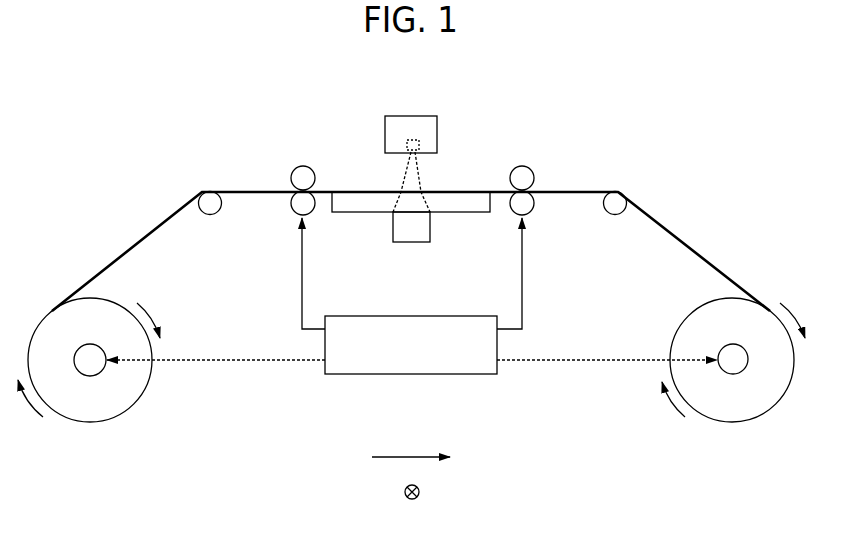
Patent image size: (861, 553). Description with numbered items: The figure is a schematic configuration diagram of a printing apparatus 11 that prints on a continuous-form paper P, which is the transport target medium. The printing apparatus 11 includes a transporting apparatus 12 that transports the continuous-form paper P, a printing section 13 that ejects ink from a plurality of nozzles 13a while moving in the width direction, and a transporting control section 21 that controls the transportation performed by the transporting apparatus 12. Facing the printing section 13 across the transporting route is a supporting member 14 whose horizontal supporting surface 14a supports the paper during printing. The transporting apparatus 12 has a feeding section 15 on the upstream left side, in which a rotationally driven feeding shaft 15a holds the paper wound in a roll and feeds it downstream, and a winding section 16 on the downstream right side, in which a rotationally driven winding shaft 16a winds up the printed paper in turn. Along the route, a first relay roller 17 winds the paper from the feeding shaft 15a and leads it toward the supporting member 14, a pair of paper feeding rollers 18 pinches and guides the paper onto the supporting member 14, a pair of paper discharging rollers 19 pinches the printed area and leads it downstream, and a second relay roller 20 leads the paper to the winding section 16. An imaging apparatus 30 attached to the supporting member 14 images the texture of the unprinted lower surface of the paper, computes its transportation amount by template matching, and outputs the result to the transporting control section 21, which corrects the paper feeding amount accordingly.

The printing apparatus 11 is at (133, 132).
The transporting apparatus 12 is at (702, 233).
The printing section 13 is at (413, 116).
The nozzles 13a is at (416, 176).
The supporting member 14 is at (457, 212).
The supporting surface 14a is at (464, 190).
The feeding section 15 is at (78, 438).
The feeding shaft 15a is at (88, 370).
The winding section 16 is at (745, 437).
The winding shaft 16a is at (732, 370).
The first relay roller 17 is at (208, 213).
The pair of paper feeding rollers 18 is at (292, 205).
The pair of paper discharging rollers 19 is at (531, 203).
The second relay roller 20 is at (612, 213).
The transporting control section 21 is at (413, 375).
The imaging apparatus 30 is at (378, 232).
The continuous-form paper P is at (148, 236).